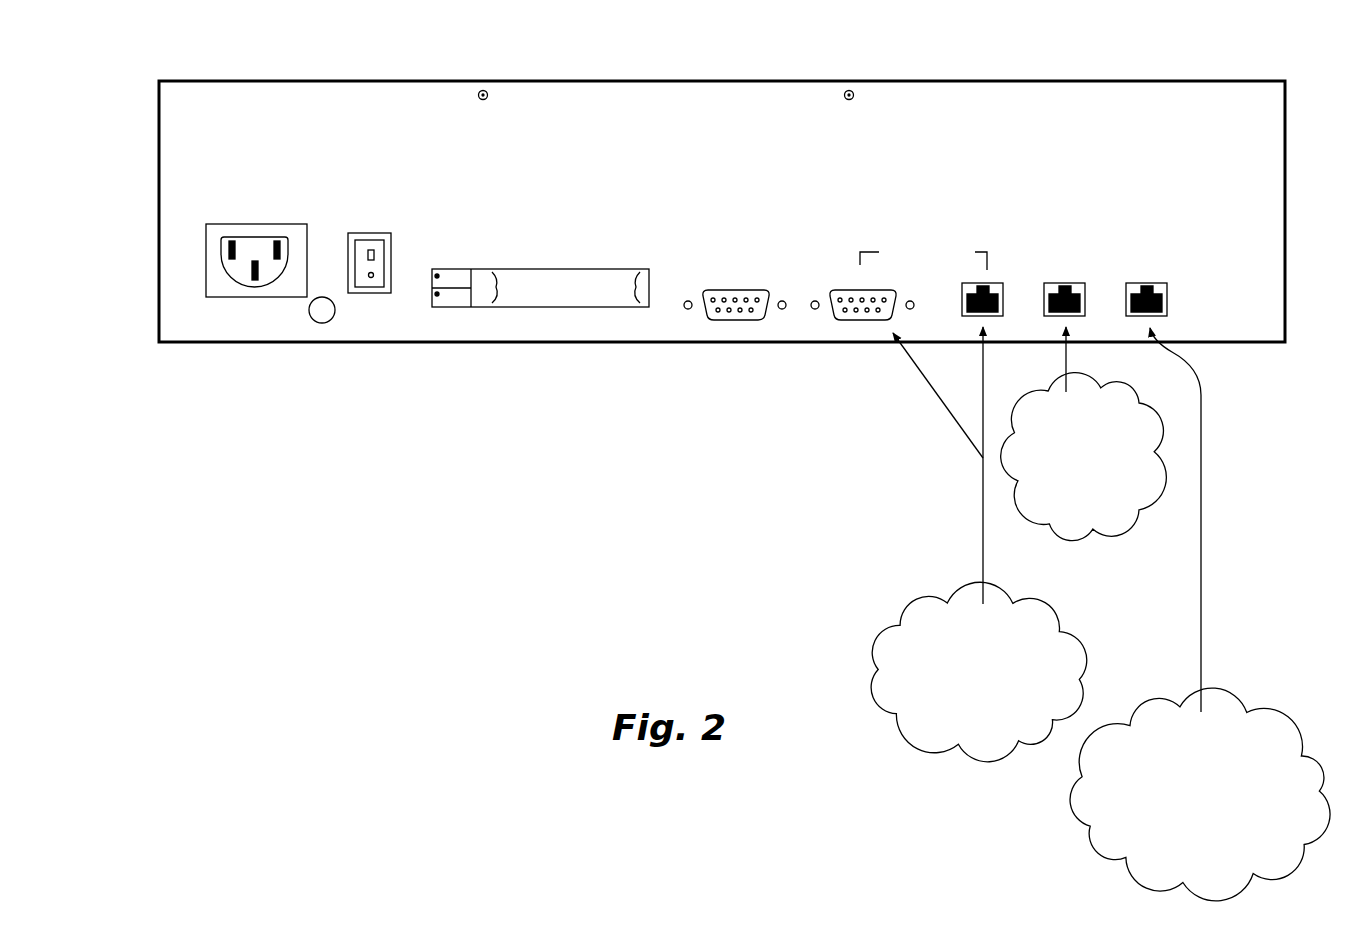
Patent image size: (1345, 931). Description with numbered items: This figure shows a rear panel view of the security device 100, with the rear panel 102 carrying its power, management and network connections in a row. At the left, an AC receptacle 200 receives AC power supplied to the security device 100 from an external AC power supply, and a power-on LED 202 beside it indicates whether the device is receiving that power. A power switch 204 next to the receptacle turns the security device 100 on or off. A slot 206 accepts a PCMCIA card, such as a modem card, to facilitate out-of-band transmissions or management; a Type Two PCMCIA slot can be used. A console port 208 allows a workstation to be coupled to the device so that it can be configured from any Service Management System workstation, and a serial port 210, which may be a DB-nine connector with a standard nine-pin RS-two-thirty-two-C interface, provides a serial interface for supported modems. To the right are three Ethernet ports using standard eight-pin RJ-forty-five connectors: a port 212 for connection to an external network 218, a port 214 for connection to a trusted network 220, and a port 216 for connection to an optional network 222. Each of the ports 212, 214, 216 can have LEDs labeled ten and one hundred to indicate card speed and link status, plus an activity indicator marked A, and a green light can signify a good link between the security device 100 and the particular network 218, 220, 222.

The security device 100 is at (452, 531).
The rear panel / chassis 102 is at (372, 118).
The AC receptacle 200 is at (262, 207).
The power-on LED 202 is at (322, 332).
The power switch 204 is at (370, 304).
The slot 206 is at (537, 318).
The console port 208 is at (735, 330).
The serial port 210 is at (861, 330).
The port 212 is at (1002, 233).
The port 214 is at (1066, 208).
The port 216 is at (1150, 208).
The external network 218 is at (871, 690).
The trusted network 220 is at (1107, 543).
The optional network 222 is at (1075, 810).